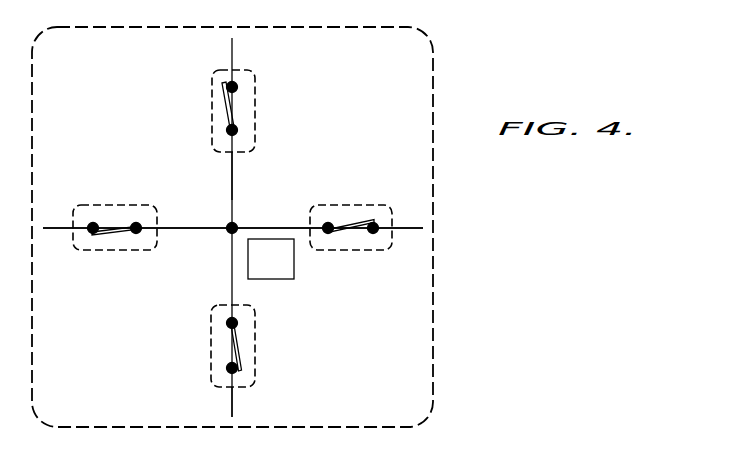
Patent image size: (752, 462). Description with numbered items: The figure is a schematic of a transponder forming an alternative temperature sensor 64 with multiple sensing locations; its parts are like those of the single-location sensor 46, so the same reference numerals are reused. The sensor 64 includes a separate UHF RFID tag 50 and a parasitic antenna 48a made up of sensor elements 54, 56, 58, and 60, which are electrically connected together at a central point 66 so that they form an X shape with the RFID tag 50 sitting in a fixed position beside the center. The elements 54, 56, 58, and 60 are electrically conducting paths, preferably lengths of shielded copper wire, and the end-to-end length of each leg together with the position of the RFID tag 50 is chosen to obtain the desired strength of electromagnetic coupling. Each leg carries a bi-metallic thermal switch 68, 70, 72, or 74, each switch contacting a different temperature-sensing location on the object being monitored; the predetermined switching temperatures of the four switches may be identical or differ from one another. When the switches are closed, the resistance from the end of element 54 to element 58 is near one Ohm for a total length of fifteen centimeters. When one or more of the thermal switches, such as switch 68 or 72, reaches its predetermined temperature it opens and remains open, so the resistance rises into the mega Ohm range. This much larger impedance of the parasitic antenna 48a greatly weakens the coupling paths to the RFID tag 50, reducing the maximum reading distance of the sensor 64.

The temperature sensor 64 is at (456, 71).
The parasitic antenna 48a is at (318, 133).
The central point 66 is at (236, 223).
The sensor element 54 is at (236, 166).
The sensor element 58 is at (236, 400).
The sensor element 60 is at (188, 227).
The sensor element 56 is at (410, 230).
The bi-metallic thermal switch 68 is at (212, 90).
The bi-metallic thermal switch 70 is at (352, 205).
The bi-metallic thermal switch 74 is at (112, 250).
The bi-metallic thermal switch 72 is at (211, 348).
The RFID tag 50 is at (294, 270).
The temperature sensor 46 is at (683, 461).